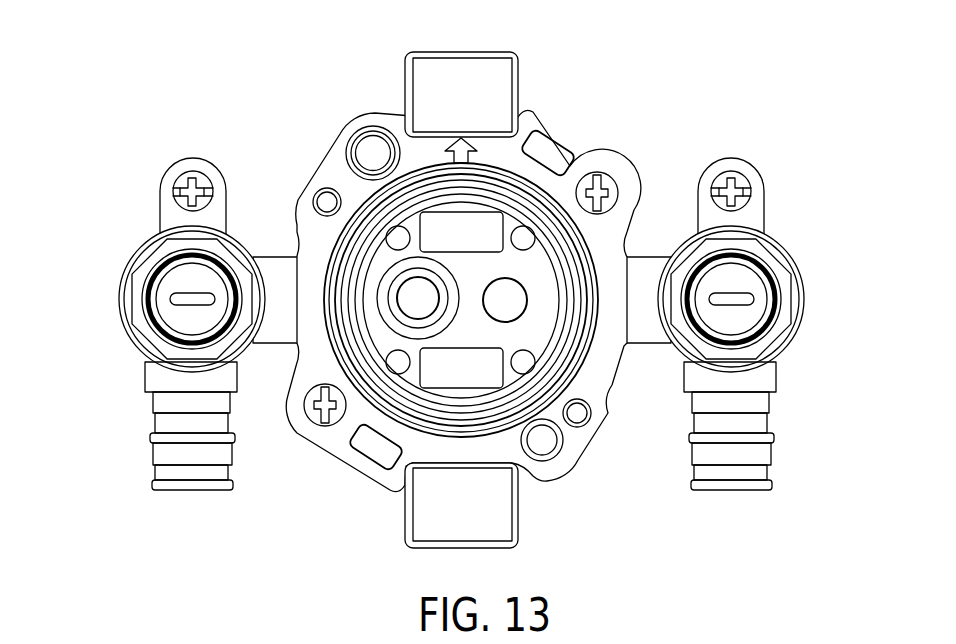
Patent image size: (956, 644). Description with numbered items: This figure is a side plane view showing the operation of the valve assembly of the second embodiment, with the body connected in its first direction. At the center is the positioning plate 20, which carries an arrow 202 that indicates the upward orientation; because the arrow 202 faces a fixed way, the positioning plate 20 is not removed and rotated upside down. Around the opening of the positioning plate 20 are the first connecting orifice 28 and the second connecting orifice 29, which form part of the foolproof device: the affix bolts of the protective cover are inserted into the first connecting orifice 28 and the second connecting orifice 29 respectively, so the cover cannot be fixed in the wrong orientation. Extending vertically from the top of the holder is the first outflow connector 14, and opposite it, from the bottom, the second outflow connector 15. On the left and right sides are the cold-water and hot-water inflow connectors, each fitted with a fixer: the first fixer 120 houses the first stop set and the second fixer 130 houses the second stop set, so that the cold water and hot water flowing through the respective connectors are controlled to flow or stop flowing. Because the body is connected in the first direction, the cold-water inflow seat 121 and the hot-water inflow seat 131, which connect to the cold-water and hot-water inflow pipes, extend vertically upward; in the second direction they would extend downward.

The first outflow connector 14 is at (520, 80).
The second outflow connector 15 is at (520, 517).
The positioning plate 20 is at (483, 275).
The first connecting orifice 28 is at (368, 148).
The second connecting orifice 29 is at (548, 445).
The first fixer 120 is at (124, 276).
The cold-water inflow seat 121 is at (152, 453).
The second fixer 130 is at (787, 250).
The hot-water inflow seat 131 is at (773, 453).
The arrow 202 is at (471, 137).